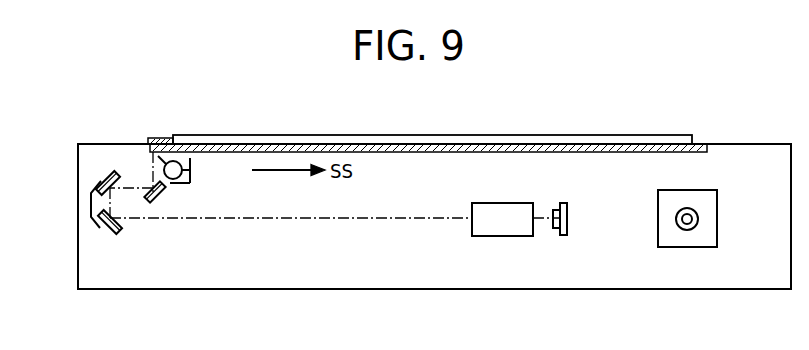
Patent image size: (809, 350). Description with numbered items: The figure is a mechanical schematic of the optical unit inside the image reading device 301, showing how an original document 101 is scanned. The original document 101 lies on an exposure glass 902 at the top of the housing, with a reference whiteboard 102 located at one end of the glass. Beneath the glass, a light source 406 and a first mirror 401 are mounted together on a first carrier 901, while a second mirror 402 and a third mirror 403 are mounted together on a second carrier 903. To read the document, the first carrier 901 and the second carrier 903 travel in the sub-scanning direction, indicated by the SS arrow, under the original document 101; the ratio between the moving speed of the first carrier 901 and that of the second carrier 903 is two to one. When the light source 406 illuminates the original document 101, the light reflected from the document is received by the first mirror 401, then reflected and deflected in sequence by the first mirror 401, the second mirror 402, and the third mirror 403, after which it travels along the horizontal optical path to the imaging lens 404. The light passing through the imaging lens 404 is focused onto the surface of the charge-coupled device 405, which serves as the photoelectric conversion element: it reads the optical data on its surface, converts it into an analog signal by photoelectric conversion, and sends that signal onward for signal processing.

The original document 101 is at (282, 135).
The reference whiteboard 102 is at (158, 138).
The image reading device 301 is at (755, 144).
The first mirror 401 is at (162, 195).
The second mirror 402 is at (100, 186).
The third mirror 403 is at (93, 226).
The imaging lens 404 is at (506, 236).
The charge-coupled device (CCD) 405 is at (563, 235).
The light source 406 is at (191, 168).
The first carrier 901 is at (190, 181).
The exposure glass 902 is at (702, 144).
The second carrier 903 is at (110, 174).